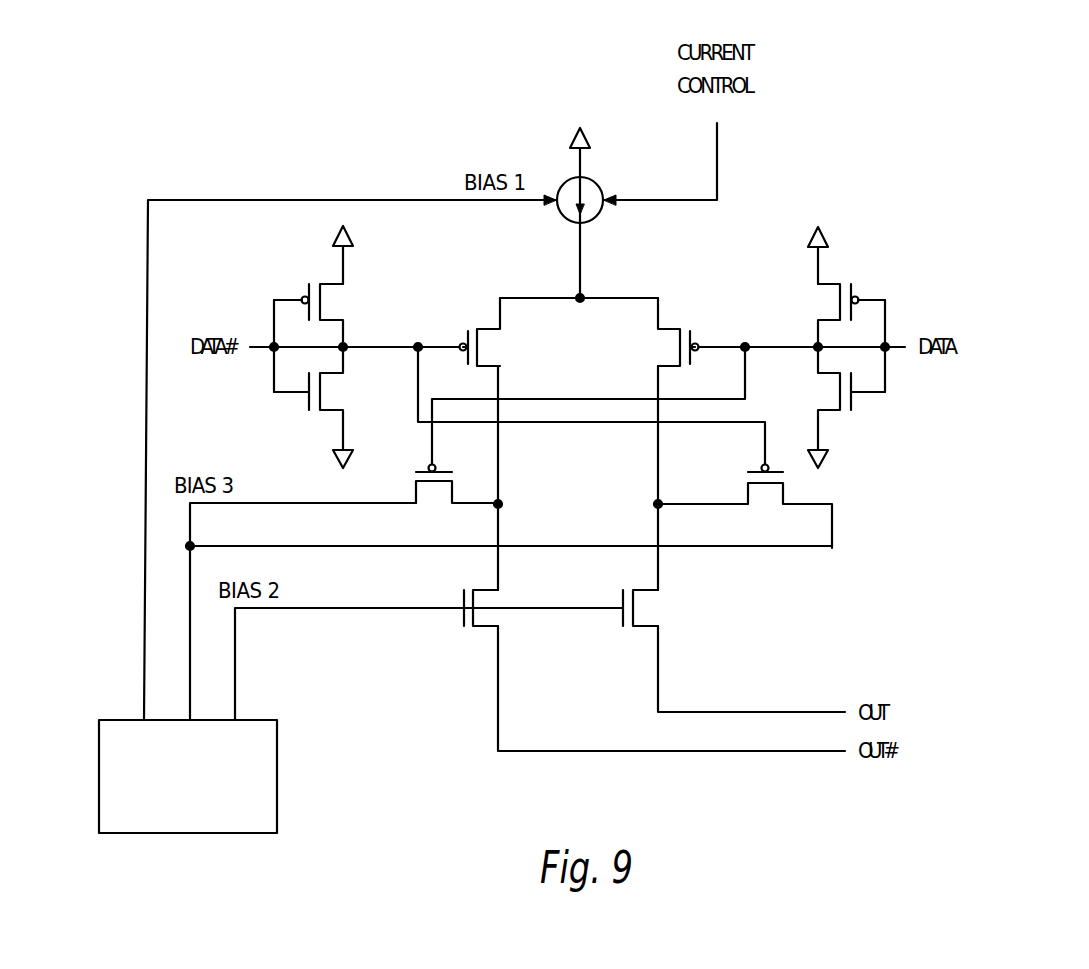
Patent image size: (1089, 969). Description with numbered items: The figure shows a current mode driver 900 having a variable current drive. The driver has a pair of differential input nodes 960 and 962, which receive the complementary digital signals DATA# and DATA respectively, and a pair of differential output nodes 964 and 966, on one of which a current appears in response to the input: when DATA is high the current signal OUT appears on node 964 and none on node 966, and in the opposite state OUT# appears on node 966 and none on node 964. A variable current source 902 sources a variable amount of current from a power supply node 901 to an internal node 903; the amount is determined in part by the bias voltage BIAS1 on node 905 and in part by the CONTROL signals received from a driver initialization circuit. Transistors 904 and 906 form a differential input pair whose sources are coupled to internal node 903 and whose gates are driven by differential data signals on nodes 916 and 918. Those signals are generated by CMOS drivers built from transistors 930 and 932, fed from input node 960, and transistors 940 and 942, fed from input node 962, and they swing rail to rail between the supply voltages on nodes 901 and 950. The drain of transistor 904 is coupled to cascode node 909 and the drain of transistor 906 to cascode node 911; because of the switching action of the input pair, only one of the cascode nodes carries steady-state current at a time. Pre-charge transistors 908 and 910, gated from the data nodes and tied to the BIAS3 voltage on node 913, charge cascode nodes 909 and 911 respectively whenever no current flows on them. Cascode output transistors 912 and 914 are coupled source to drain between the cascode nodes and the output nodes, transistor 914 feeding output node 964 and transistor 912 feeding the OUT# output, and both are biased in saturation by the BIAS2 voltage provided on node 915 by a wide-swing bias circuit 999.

The current mode driver 900 is at (943, 144).
The power supply node 901 is at (590, 134).
The variable current source 902 is at (600, 190).
The internal node 903 is at (585, 294).
The input transistor 904 is at (485, 350).
The bias voltage node 905 is at (425, 198).
The input transistor 906 is at (672, 350).
The pre-charge transistor 908 is at (432, 494).
The cascode node 909 is at (500, 520).
The pre-charge transistor 910 is at (765, 494).
The cascode node 911 is at (655, 520).
The cascode output transistor 912 is at (480, 614).
The bias voltage node 913 is at (298, 502).
The cascode output transistor 914 is at (645, 610).
The bias voltage node 915 is at (392, 606).
The differential data node 916 is at (400, 345).
The differential data node 918 is at (760, 345).
The transistor 930 is at (328, 304).
The transistor 932 is at (328, 394).
The transistor 940 is at (832, 298).
The transistor 942 is at (832, 394).
The power supply node 950 is at (348, 460).
The differential input node 960 is at (258, 350).
The differential input node 962 is at (898, 352).
The differential output node 964 is at (813, 710).
The differential output node 966 is at (790, 754).
The wide-swing bias circuit 999 is at (256, 718).